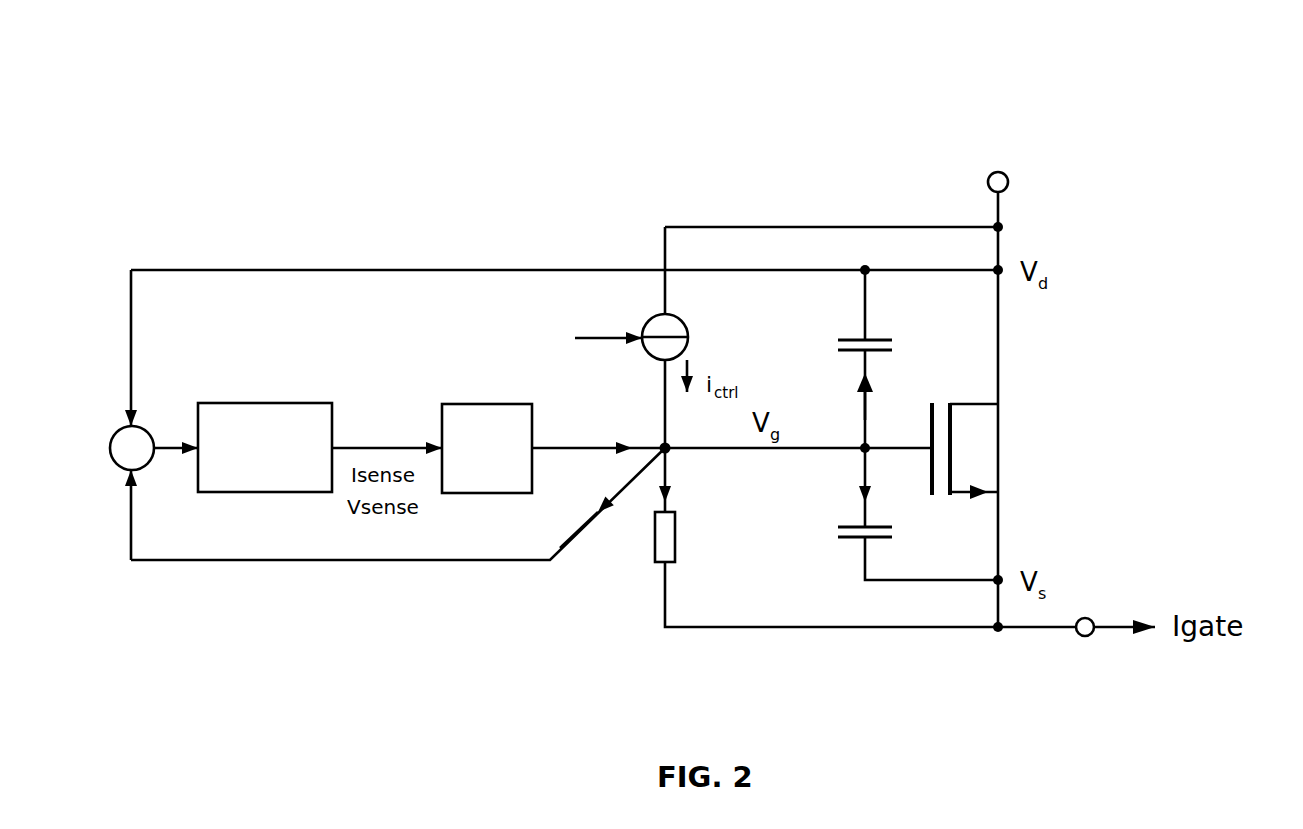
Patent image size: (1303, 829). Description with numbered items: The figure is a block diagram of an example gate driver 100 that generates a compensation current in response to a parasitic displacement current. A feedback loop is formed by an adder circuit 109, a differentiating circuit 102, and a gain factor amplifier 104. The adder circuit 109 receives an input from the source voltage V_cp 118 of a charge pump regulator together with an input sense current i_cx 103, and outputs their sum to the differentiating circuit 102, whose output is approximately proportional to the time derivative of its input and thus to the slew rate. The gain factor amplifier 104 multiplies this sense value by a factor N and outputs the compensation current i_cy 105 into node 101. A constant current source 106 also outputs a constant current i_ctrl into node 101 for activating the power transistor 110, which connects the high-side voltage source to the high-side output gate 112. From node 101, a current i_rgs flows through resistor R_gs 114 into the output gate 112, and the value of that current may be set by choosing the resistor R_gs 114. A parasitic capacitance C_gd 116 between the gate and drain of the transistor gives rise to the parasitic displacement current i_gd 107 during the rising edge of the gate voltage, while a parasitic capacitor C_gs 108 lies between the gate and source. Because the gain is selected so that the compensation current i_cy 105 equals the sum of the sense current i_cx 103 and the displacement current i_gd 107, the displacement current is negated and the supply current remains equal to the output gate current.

The gate driver 100 is at (163, 108).
The node 101 is at (668, 446).
The differentiating circuit 102 is at (315, 403).
The sense current i_cx 103 is at (612, 500).
The gain factor amplifier 104 is at (525, 404).
The compensation current i_cy 105 is at (632, 442).
The constant current source 106 is at (682, 322).
The parasitic displacement current i_gd 107 is at (858, 383).
The capacitor C_gs 108 is at (870, 540).
The adder circuit 109 is at (118, 466).
The transistor N1 110 is at (927, 438).
The output gate 112 is at (1090, 636).
The resistor R_gs 114 is at (655, 560).
The capacitance C_gd 116 is at (880, 338).
The source voltage V_cp 118 is at (1006, 176).